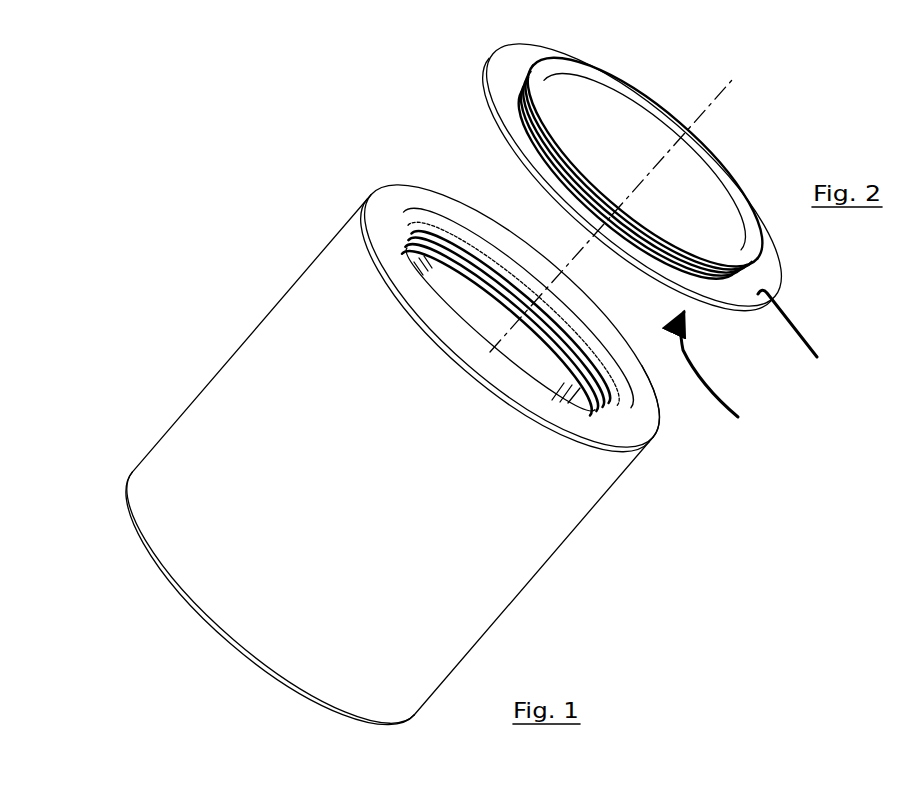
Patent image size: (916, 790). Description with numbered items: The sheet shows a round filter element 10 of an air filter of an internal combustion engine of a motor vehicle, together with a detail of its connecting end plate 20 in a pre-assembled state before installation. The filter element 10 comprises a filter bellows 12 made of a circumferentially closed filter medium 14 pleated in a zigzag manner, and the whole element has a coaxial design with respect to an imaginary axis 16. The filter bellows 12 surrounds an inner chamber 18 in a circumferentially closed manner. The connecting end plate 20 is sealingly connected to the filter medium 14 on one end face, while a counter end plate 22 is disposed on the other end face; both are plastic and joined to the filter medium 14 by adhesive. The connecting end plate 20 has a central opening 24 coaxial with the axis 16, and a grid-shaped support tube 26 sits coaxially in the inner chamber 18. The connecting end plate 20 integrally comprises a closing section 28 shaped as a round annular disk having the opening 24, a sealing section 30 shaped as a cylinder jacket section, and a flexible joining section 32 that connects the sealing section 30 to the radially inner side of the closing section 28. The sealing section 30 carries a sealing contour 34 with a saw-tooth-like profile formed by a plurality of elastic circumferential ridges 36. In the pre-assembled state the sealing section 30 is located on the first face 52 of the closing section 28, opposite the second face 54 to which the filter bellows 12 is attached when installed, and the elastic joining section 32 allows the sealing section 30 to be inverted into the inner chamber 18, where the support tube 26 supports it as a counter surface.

In FIG. 1, the filter element 10 is at (209, 124).
In FIG. 1, the filter bellows 12 is at (195, 424).
In FIG. 1, the filter medium 14 is at (433, 640).
In FIG. 1, the axis 16 is at (553, 265).
In FIG. 2, the axis 16 is at (703, 100).
In FIG. 1, the inner chamber 18 is at (485, 328).
In FIG. 1, the connecting end plate 20 is at (640, 388).
In FIG. 2, the connecting end plate 20 is at (748, 178).
In FIG. 1, the counter end plate 22 is at (120, 494).
In FIG. 1, the central opening 24 is at (590, 322).
In FIG. 1, the support tube 26 is at (412, 302).
In FIG. 1, the closing section 28 is at (640, 430).
In FIG. 2, the closing section 28 is at (750, 305).
In FIG. 1, the sealing section 30 is at (463, 234).
In FIG. 2, the sealing section 30 is at (643, 115).
In FIG. 1, the flexible joining section 32 is at (425, 219).
In FIG. 2, the flexible joining section 32 is at (775, 290).
In FIG. 1, the sealing contour 34 is at (590, 320).
In FIG. 2, the sealing contour 34 is at (520, 92).
In FIG. 1, the ridges 36 is at (500, 268).
In FIG. 2, the ridges 36 is at (522, 113).
In FIG. 2, the first face 52 is at (725, 373).
In FIG. 2, the second face 54 is at (805, 329).